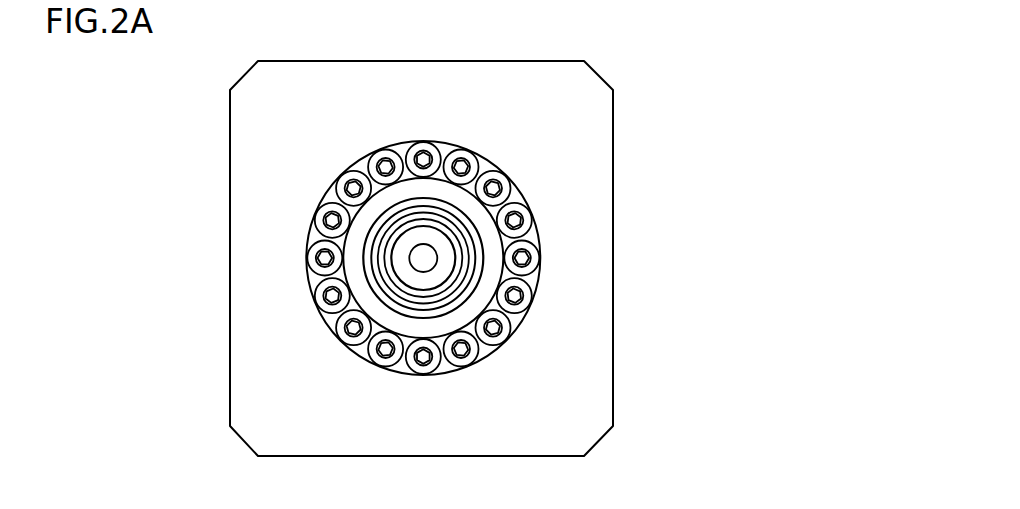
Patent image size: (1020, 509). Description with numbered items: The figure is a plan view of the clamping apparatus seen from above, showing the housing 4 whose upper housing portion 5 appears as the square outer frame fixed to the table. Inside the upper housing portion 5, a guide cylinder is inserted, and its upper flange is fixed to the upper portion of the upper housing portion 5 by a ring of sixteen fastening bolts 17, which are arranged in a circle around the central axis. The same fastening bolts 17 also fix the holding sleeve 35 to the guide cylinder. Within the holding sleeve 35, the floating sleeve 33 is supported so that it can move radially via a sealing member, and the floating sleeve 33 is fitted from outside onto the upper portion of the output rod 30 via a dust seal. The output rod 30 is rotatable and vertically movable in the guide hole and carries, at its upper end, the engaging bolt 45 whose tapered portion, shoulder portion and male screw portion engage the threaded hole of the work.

The housing 4 is at (469, 258).
The upper housing portion 5 is at (613, 172).
The fastening bolts 17 is at (493, 340).
The output rod 30 is at (456, 237).
The floating sleeve 33 is at (483, 257).
The holding sleeve 35 is at (520, 325).
The engaging bolt 45 is at (423, 219).